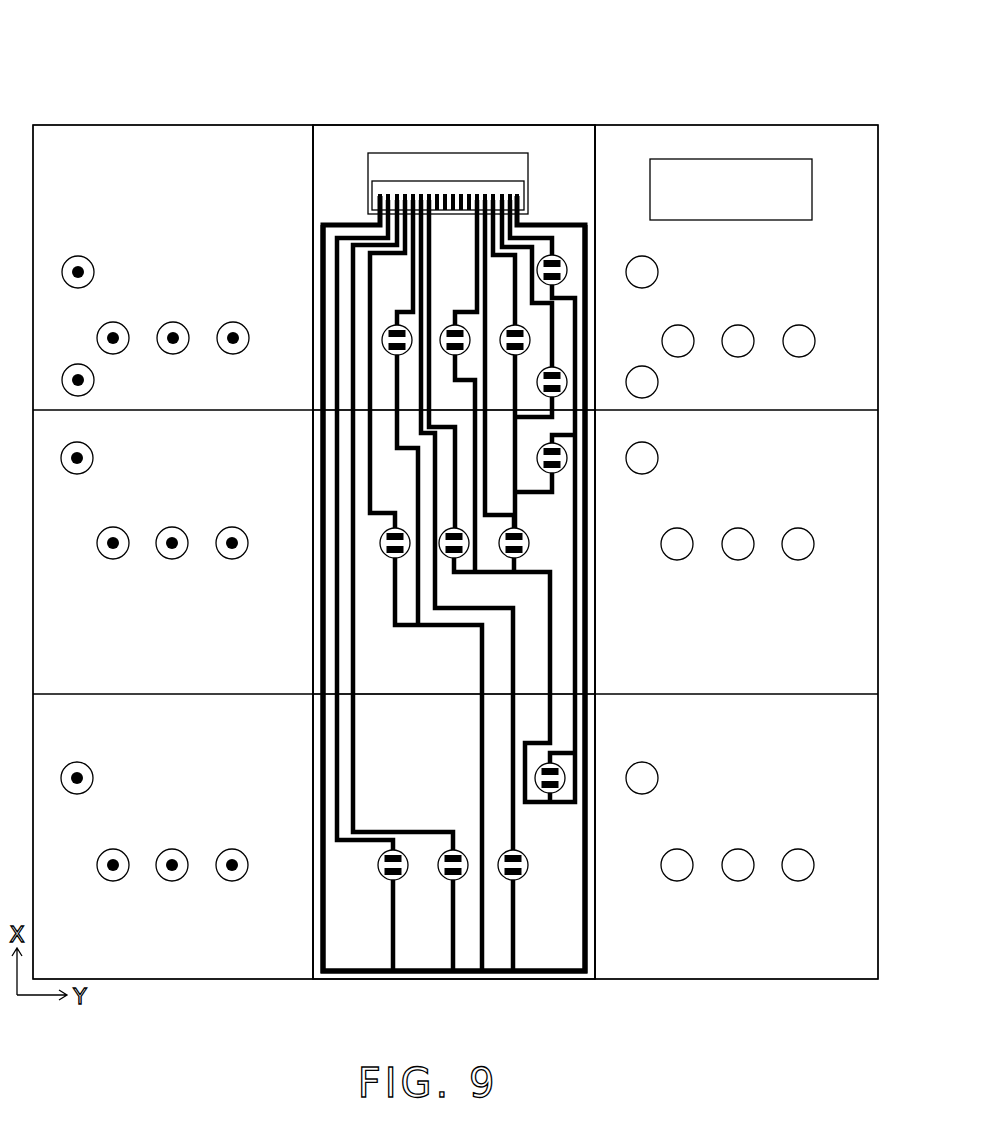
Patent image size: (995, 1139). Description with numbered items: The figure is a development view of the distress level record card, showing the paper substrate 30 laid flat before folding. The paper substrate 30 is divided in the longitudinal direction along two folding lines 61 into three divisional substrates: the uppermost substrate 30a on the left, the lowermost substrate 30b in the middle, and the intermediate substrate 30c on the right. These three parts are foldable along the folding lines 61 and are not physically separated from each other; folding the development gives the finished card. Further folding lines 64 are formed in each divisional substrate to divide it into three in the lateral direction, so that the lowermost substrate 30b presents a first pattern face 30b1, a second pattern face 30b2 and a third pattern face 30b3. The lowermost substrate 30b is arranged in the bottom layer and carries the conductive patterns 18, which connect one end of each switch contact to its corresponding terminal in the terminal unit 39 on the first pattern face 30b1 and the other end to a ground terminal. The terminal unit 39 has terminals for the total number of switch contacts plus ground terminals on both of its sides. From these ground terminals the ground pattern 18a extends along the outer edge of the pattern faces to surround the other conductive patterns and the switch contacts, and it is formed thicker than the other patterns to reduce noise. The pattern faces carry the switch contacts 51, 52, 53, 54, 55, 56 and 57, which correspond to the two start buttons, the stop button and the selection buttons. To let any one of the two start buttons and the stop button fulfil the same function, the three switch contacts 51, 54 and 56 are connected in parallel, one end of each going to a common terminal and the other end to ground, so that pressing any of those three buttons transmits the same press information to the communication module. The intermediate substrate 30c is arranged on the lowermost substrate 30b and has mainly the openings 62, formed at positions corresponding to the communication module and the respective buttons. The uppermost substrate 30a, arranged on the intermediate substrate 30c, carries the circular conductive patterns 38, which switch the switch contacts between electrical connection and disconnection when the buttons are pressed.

The paper substrate 30 is at (310, 62).
The uppermost substrate 30a is at (273, 126).
The lowermost substrate 30b is at (480, 125).
The intermediate substrate 30c is at (642, 125).
The first pattern face 30b1 is at (313, 188).
The second pattern face 30b2 is at (385, 660).
The third pattern face 30b3 is at (560, 943).
The conductive patterns 18 is at (553, 657).
The ground pattern 18a is at (342, 221).
The circular conductive patterns 38 is at (78, 256).
The terminal unit 39 is at (516, 181).
The switch contact 51 is at (562, 262).
The switch contact 52 is at (531, 341).
The switch contact 53 is at (562, 388).
The switch contact 54 is at (566, 465).
The switch contact 55 is at (531, 547).
The switch contact 56 is at (560, 783).
The switch contact 57 is at (531, 871).
The folding lines 61 is at (313, 291).
The openings 62 is at (727, 222).
The folding lines 64 is at (787, 415).